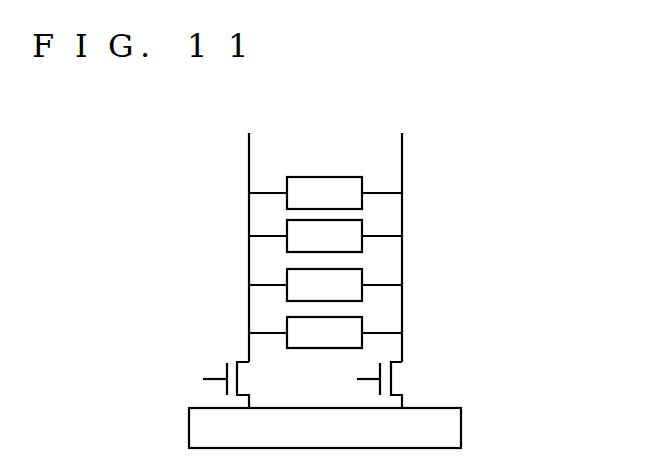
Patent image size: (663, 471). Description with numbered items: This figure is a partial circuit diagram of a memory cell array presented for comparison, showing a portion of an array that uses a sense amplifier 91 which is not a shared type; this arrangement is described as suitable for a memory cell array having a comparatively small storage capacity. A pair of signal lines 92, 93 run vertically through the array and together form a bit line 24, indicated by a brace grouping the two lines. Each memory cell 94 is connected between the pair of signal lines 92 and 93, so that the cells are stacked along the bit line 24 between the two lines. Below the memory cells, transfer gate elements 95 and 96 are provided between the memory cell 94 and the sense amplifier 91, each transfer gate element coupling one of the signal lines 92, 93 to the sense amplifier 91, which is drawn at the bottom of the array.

The bit line 24 is at (485, 303).
The sense amplifier 91 is at (461, 425).
The signal line 92 is at (402, 245).
The signal line 93 is at (249, 266).
The memory cell 94 is at (362, 182).
The transfer gate element 95 is at (405, 382).
The transfer gate element 96 is at (222, 369).